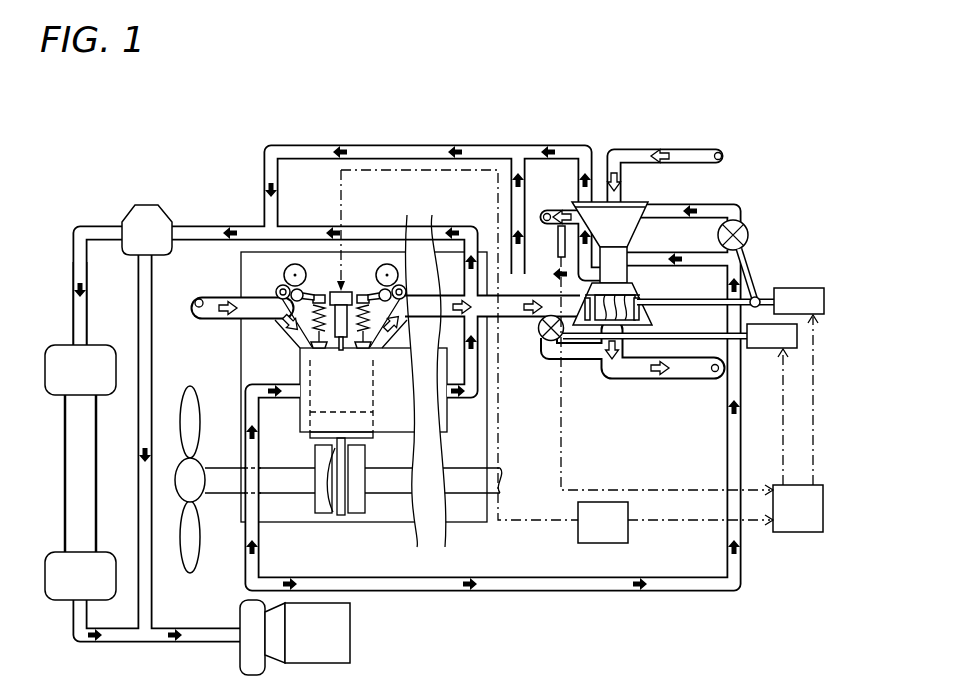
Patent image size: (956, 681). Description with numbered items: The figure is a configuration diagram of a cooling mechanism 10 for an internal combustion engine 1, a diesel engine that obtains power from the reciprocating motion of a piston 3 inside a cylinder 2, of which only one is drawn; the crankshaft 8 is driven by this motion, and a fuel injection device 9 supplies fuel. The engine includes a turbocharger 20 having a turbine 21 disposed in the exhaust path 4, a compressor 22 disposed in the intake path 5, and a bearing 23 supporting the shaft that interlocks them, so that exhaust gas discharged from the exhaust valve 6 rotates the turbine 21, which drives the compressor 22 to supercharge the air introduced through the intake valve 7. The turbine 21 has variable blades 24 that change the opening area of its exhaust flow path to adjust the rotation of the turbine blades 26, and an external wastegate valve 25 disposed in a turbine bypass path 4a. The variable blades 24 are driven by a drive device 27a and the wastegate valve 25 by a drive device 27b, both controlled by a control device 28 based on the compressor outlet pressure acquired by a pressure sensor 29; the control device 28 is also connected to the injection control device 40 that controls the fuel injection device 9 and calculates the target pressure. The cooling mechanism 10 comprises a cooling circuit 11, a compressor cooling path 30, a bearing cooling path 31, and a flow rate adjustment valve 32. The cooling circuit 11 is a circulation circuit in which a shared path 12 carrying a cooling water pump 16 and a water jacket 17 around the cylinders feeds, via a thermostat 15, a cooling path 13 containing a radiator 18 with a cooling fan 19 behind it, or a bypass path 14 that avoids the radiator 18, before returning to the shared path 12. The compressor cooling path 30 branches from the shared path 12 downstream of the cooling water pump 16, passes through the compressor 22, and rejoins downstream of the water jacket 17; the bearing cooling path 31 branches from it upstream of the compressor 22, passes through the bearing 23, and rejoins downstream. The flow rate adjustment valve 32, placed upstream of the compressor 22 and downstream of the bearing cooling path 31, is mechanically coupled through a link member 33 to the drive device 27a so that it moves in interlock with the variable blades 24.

The internal combustion engine 1 is at (113, 188).
The cylinder 2 is at (300, 362).
The piston 3 is at (332, 513).
The exhaust path 4 is at (445, 294).
The turbine bypass path 4a is at (541, 356).
The intake path 5 is at (549, 208).
The exhaust valve 6 is at (362, 292).
The intake valve 7 is at (313, 292).
The crankshaft 8 is at (472, 494).
The fuel injection device 9 is at (336, 290).
The cooling mechanism 10 is at (81, 224).
The cooling circuit 11 is at (236, 226).
The shared path 12 is at (228, 626).
The cooling path 13 is at (88, 270).
The bypass path 14 is at (153, 330).
The thermostat 15 is at (146, 205).
The cooling water pump 16 is at (351, 637).
The water jacket 17 is at (380, 436).
The radiator 18 is at (60, 345).
The cooling fan 19 is at (180, 548).
The turbocharger 20 is at (632, 211).
The turbine 21 is at (573, 343).
The compressor 22 is at (600, 200).
The bearing 23 is at (648, 203).
The variable blades 24 is at (628, 342).
The wastegate valve 25 is at (543, 350).
The turbine blades 26 is at (604, 352).
The drive device 27a is at (800, 288).
The drive device 27b is at (760, 350).
The control device 28 is at (803, 533).
The pressure sensor 29 is at (557, 250).
The compressor cooling path 30 is at (406, 145).
The bearing cooling path 31 is at (688, 253).
The flow rate adjustment valve 32 is at (746, 222).
The link member 33 is at (752, 278).
The injection control device 40 is at (598, 544).